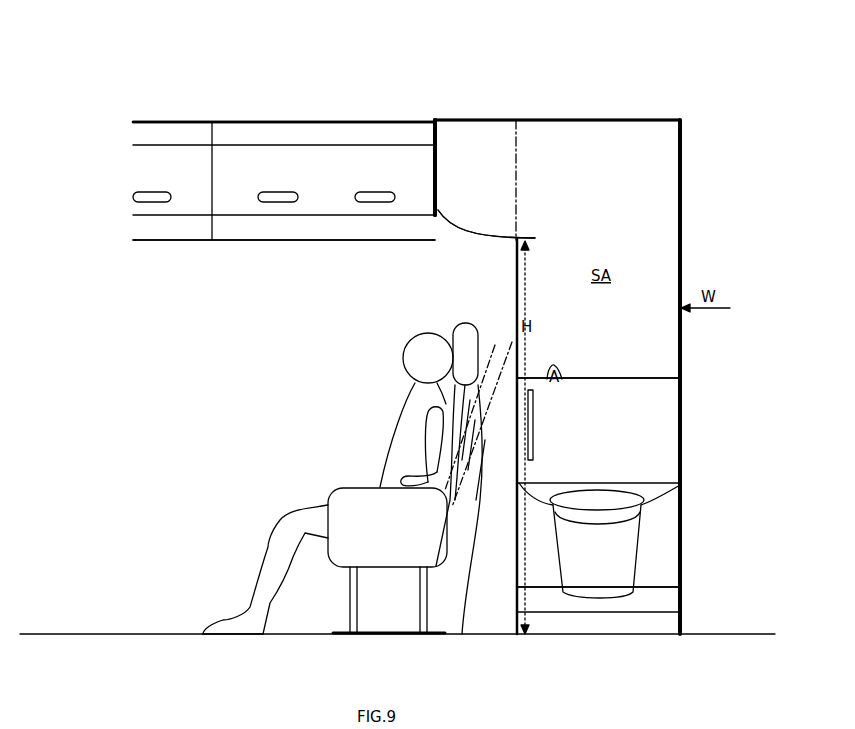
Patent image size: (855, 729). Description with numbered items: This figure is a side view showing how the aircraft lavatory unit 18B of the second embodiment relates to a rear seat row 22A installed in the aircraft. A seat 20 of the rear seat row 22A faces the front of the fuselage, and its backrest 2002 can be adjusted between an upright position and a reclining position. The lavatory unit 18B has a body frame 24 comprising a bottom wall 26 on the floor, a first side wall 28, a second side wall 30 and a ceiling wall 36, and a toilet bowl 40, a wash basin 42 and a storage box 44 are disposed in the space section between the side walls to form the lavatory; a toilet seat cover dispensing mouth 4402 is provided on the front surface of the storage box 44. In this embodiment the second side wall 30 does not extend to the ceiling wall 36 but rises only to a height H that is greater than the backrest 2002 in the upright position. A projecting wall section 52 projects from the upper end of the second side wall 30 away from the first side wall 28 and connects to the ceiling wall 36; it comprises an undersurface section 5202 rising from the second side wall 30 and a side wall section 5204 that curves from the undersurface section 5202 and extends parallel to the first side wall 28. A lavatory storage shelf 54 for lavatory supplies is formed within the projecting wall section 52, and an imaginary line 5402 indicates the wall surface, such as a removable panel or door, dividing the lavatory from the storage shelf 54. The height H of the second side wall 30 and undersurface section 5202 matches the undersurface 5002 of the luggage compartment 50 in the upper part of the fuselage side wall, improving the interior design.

The aircraft lavatory unit 18B is at (600, 93).
The seat 20 is at (387, 550).
The rear seat row 22A is at (318, 588).
The body frame 24 is at (622, 118).
The bottom wall 26 is at (590, 634).
The first side wall 28 is at (682, 183).
The second side wall 30 is at (515, 308).
The ceiling wall 36 is at (562, 120).
The toilet bowl 40 is at (650, 505).
The wash basin 42 is at (560, 372).
The storage box 44 is at (633, 397).
The toilet seat cover dispensing mouth 4402 is at (533, 428).
The luggage compartment 50 is at (268, 172).
The projecting wall section 52 is at (426, 185).
The lavatory storage shelf 54 is at (485, 179).
The undersurface 5002 is at (293, 243).
The undersurface section 5202 is at (475, 240).
The side wall section 5204 is at (422, 174).
The imaginary line 5402 is at (516, 118).
The backrest 2002 is at (525, 631).